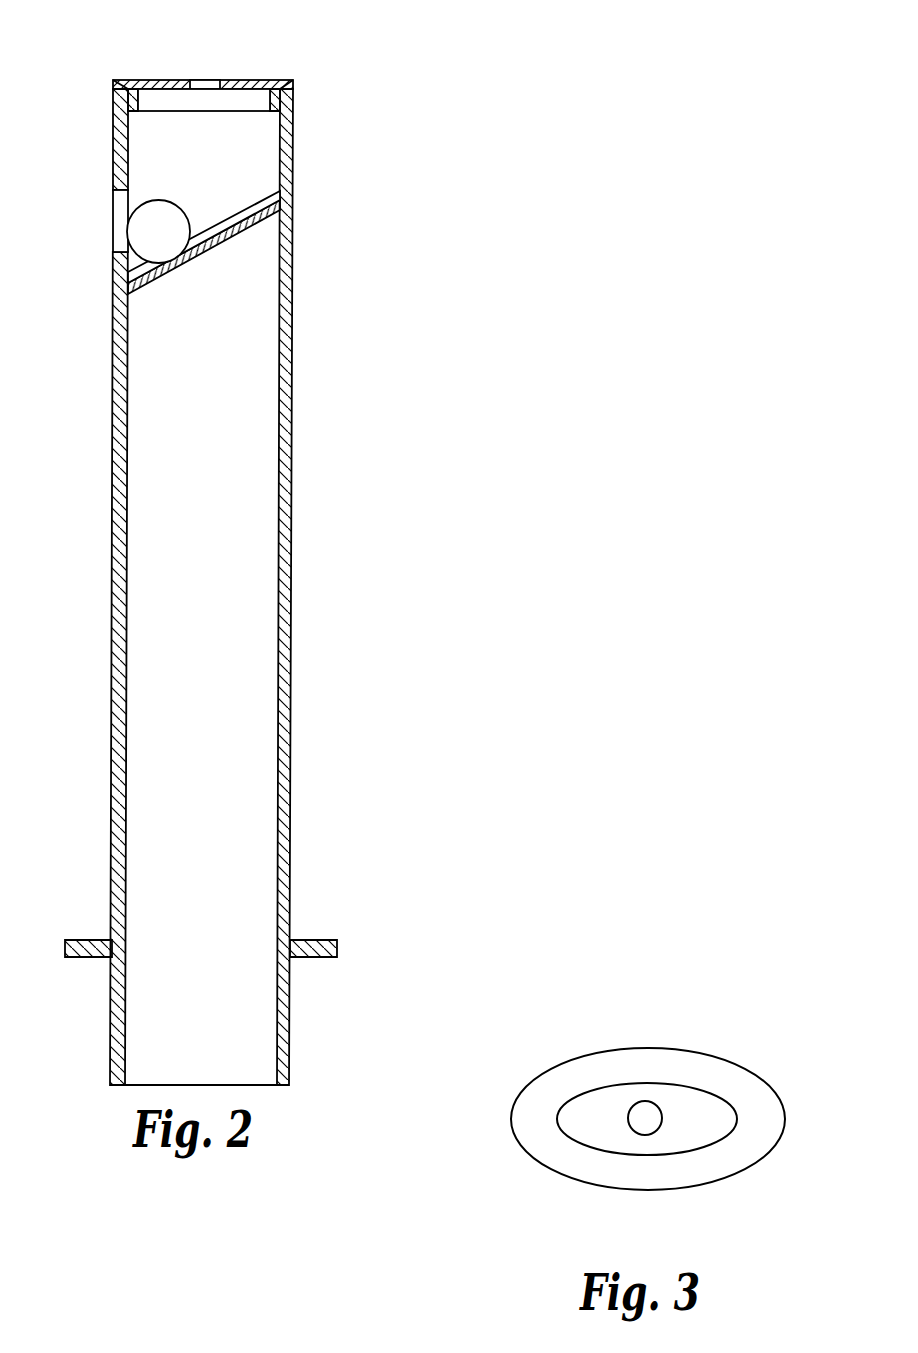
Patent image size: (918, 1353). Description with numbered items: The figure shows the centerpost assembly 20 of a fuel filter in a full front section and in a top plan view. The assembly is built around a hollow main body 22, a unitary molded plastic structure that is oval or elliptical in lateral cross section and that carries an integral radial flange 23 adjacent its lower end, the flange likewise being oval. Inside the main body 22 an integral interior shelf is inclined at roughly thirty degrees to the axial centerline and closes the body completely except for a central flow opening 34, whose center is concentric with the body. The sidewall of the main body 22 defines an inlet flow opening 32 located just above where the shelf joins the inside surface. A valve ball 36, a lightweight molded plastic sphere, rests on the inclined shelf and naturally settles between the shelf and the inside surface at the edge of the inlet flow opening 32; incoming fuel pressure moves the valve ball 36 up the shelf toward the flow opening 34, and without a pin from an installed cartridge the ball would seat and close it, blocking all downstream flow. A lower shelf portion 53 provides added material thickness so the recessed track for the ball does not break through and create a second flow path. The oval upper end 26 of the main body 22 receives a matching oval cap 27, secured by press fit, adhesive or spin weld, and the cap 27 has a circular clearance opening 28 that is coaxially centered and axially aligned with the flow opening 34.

In FIG. 2, the centerpost assembly 20 is at (227, 551).
In FIG. 2, the main body 22 is at (292, 405).
In FIG. 2, the radial flange 23 is at (313, 940).
In FIG. 3, the radial flange 23 is at (648, 1175).
In FIG. 2, the upper end 26 is at (293, 105).
In FIG. 2, the cap 27 is at (267, 84).
In FIG. 3, the cap 27 is at (737, 1117).
In FIG. 2, the clearance opening 28 is at (203, 80).
In FIG. 2, the inlet flow opening 32 is at (117, 205).
In FIG. 2, the flow opening 34 is at (203, 246).
In FIG. 2, the valve ball 36 is at (157, 220).
In FIG. 3, the lower shelf portion 53 is at (643, 1110).